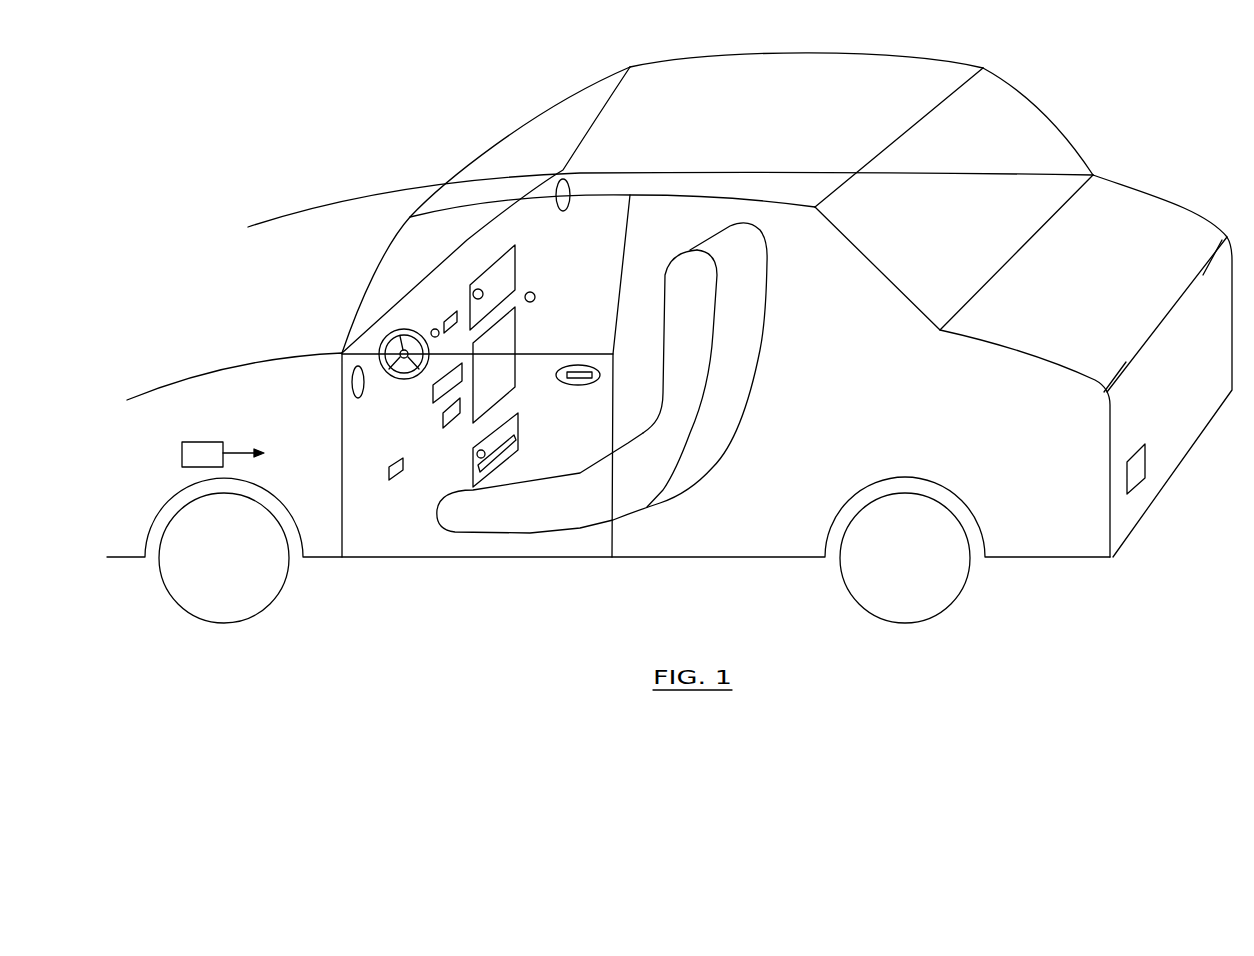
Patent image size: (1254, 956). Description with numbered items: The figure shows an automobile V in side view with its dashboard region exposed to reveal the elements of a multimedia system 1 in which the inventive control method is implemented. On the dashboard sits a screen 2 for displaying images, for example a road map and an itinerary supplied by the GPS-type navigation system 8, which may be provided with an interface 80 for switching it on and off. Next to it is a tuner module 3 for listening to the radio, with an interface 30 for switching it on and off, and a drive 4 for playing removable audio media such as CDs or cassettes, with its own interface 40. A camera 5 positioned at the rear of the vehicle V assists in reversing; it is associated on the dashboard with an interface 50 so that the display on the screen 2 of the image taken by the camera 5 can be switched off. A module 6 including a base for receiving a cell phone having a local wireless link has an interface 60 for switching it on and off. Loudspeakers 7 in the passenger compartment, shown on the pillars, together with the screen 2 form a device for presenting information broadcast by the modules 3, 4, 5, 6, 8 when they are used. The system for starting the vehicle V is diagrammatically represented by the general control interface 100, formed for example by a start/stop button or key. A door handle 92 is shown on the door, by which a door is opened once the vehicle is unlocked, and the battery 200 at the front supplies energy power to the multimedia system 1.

The automobile V is at (1031, 574).
The multimedia system 1 is at (601, 284).
The screen 2 is at (512, 340).
The tuner module 3 is at (507, 267).
The drive 4 is at (519, 417).
The camera 5 is at (1142, 460).
The module 6 is at (452, 312).
The loudspeakers 7 is at (570, 190).
The GPS-type navigation system 8 is at (445, 422).
The interface 30 is at (478, 289).
The interface 40 is at (476, 455).
The interface 50 is at (534, 294).
The interface 60 is at (431, 333).
The interface 80 is at (430, 397).
The handle 92 is at (578, 367).
The general control interface 100 is at (396, 481).
The battery 200 is at (205, 453).